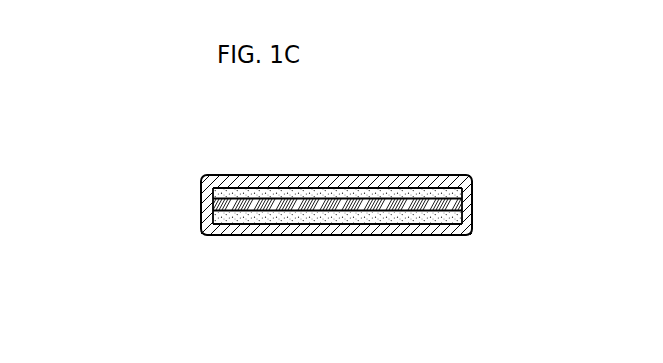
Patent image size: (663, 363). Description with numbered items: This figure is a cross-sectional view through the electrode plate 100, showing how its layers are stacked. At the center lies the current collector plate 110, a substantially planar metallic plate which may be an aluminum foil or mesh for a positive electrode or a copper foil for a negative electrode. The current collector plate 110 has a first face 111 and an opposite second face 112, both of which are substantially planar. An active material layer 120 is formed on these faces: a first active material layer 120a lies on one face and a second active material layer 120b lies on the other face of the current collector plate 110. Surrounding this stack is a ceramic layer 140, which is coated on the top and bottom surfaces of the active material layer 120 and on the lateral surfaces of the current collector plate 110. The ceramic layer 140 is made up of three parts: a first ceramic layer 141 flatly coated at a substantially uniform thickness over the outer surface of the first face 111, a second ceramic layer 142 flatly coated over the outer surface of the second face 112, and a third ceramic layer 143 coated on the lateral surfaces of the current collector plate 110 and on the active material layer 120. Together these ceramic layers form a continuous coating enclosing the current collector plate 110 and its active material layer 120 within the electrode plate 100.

The electrode plate 100 is at (418, 138).
The current collector plate 110 is at (464, 204).
The first face 111 is at (465, 189).
The second face 112 is at (465, 224).
The active material layer 120 is at (105, 175).
The first active material layer 120a is at (214, 192).
The second active material layer 120b is at (214, 215).
The ceramic layer 140 is at (318, 293).
The first ceramic layer 141 is at (248, 184).
The second ceramic layer 142 is at (317, 228).
The third ceramic layer 143 is at (213, 209).